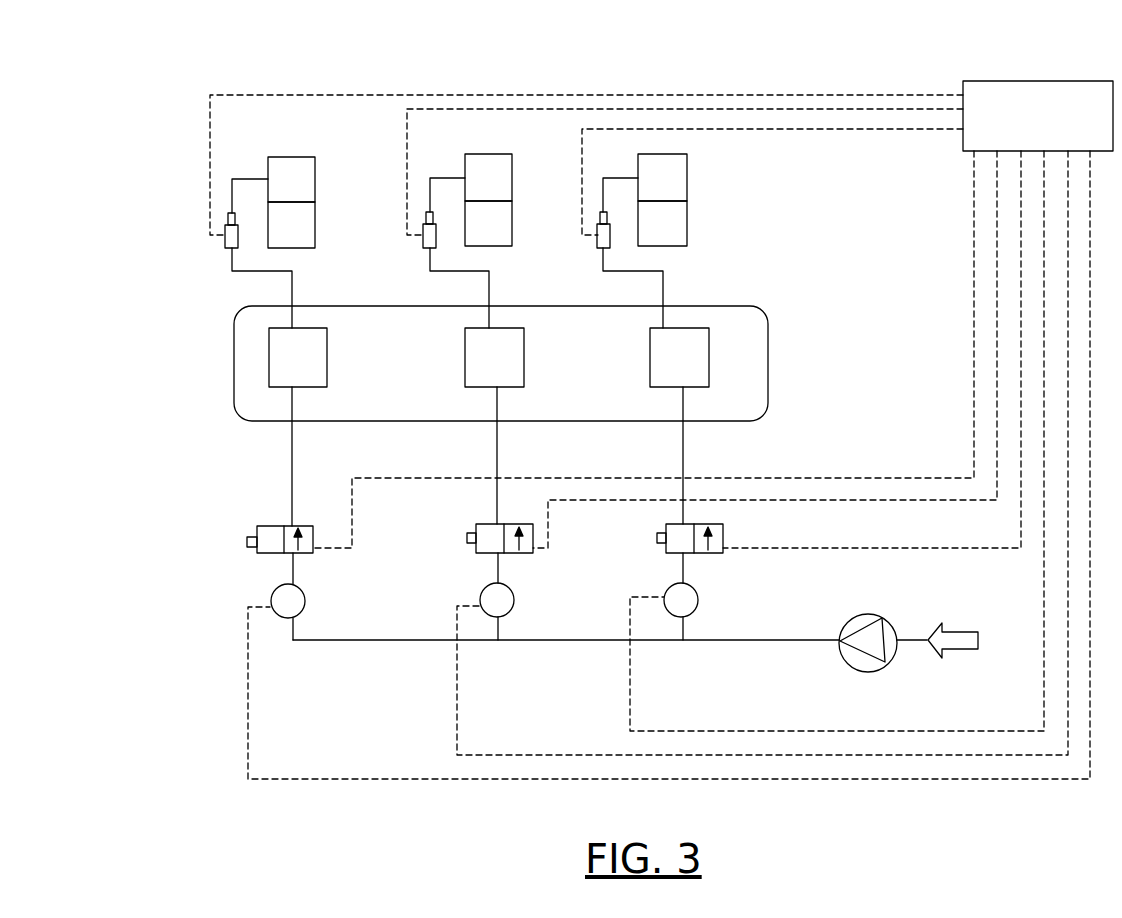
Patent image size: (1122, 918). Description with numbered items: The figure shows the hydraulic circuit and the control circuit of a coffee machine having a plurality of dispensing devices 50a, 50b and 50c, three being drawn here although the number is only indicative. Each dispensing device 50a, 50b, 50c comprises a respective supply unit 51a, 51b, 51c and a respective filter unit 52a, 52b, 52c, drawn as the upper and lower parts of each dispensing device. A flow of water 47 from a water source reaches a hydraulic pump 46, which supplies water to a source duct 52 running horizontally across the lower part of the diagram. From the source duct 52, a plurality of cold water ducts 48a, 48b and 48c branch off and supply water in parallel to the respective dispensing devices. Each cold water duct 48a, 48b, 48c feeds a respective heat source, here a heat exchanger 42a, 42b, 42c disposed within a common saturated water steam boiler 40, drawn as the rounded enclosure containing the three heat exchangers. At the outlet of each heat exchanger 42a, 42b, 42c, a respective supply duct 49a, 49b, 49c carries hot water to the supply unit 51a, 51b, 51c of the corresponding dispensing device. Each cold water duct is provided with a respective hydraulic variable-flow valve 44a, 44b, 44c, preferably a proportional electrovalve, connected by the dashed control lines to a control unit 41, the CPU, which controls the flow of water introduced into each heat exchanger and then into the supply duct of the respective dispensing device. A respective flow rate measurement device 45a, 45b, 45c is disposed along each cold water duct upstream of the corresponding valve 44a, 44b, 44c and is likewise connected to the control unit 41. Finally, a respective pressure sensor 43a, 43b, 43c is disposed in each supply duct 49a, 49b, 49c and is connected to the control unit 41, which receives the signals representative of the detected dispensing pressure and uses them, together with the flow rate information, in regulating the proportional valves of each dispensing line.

The control unit 41 is at (997, 93).
The boiler 40 is at (247, 352).
The heat exchanger 42a is at (293, 375).
The heat exchanger 42b is at (477, 375).
The heat exchanger 42c is at (675, 360).
The pressure sensor 43a is at (228, 238).
The pressure sensor 43b is at (423, 248).
The pressure sensor 43c is at (600, 248).
The hydraulic variable-flow valve 44a is at (247, 540).
The hydraulic variable-flow valve 44b is at (467, 538).
The hydraulic variable-flow valve 44c is at (657, 538).
The flow rate measurement device 45a is at (302, 590).
The flow rate measurement device 45b is at (514, 603).
The flow rate measurement device 45c is at (698, 596).
The hydraulic pump 46 is at (850, 660).
The flow of water 47 is at (965, 652).
The cold water duct 48a is at (292, 467).
The cold water duct 48b is at (497, 443).
The cold water duct 48c is at (683, 455).
The supply duct 49a is at (292, 305).
The supply duct 49b is at (489, 305).
The supply duct 49c is at (665, 305).
The dispensing device 50a is at (261, 189).
The dispensing device 50b is at (517, 207).
The dispensing device 50c is at (713, 197).
The supply unit 51a is at (280, 179).
The supply unit 51b is at (500, 178).
The supply unit 51c is at (673, 188).
The filter unit 52a is at (303, 225).
The filter unit 52b is at (488, 235).
The filter unit 52c is at (673, 222).
The source duct 52 is at (362, 641).